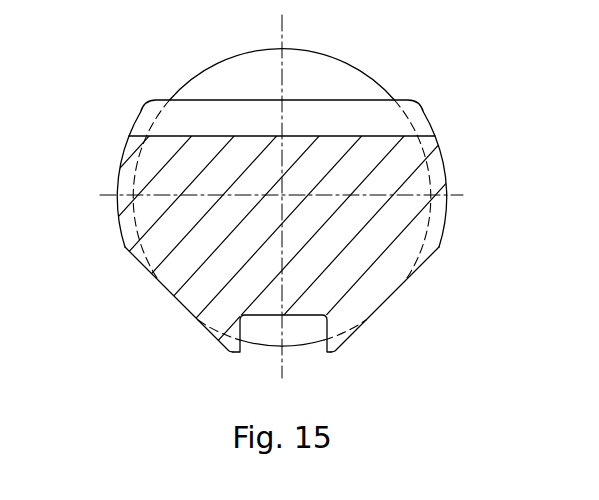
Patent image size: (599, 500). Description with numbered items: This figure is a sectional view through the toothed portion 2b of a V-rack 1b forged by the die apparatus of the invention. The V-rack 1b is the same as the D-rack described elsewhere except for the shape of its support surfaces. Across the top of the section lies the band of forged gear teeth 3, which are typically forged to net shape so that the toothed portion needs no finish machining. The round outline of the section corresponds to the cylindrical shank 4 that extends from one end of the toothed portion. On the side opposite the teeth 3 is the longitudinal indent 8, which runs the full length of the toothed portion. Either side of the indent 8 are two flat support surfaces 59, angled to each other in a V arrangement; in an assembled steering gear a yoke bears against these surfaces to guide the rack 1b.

The V-rack 1b is at (274, 199).
The toothed portion 2b is at (175, 173).
The forged gear teeth 3 is at (165, 121).
The cylindrical shank 4 is at (245, 54).
The longitudinal indent 8 is at (303, 315).
The flat support surfaces 59 is at (143, 268).